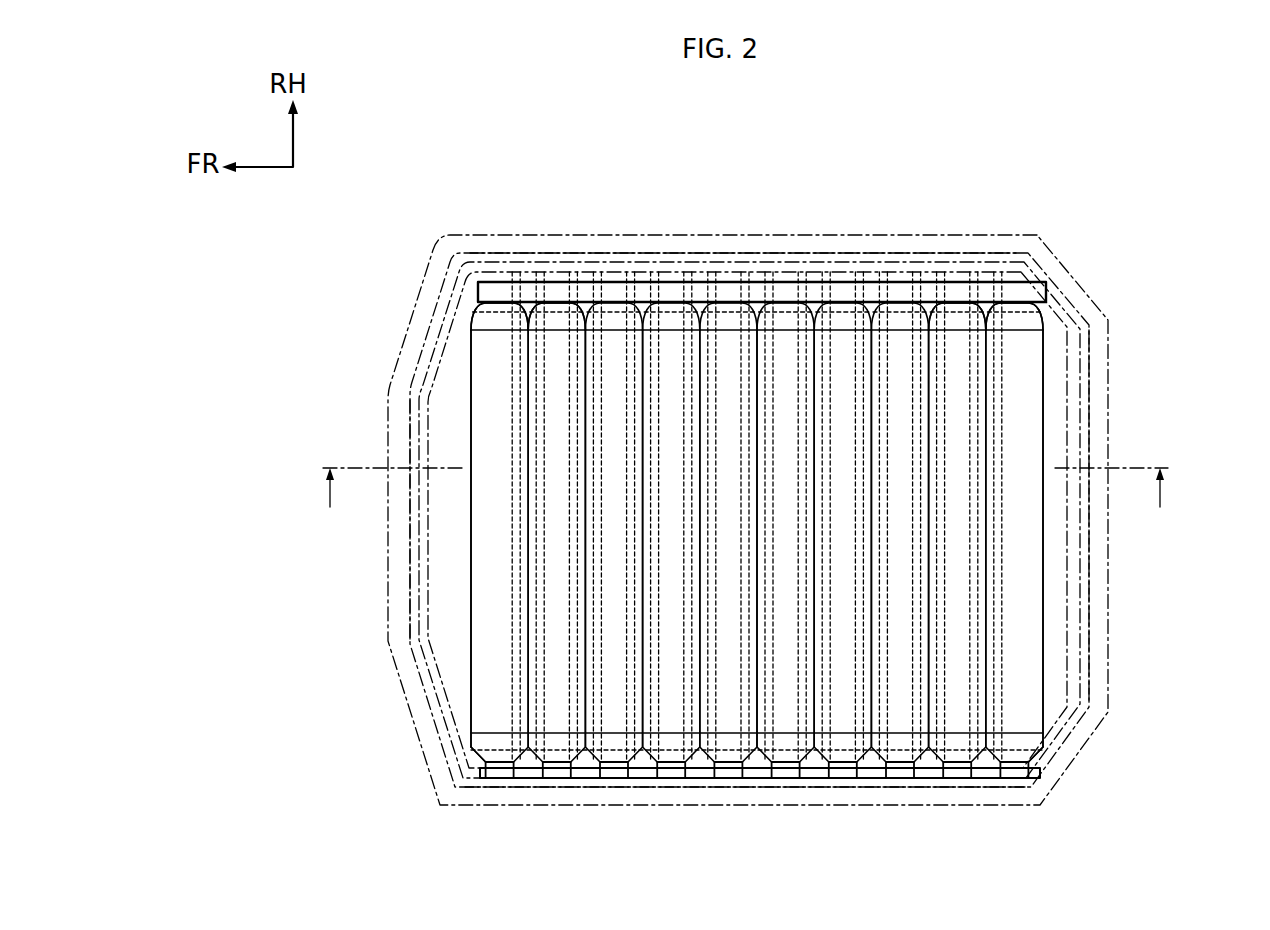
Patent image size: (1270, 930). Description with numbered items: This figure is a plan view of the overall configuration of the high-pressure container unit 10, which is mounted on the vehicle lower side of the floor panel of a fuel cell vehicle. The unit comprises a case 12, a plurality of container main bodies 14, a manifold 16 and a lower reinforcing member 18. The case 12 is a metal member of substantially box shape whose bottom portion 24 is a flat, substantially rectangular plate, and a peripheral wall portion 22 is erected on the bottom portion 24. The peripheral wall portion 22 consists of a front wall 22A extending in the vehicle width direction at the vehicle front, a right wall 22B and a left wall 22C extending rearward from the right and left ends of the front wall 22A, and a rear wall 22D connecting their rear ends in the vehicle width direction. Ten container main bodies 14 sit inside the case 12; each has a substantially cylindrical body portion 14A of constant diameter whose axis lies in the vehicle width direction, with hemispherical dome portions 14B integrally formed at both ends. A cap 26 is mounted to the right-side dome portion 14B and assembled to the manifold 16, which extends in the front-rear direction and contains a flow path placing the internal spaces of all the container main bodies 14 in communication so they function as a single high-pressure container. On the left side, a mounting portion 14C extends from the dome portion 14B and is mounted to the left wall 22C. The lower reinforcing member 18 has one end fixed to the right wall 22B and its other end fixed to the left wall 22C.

The high-pressure container unit 10 is at (1056, 174).
The case 12 is at (748, 530).
The container main body 14 is at (755, 557).
The body portion 14A is at (470, 542).
The dome portion 14B is at (478, 310).
The mounting portion 14C is at (500, 778).
The manifold 16 is at (482, 283).
The lower reinforcing member 18 is at (755, 268).
The peripheral wall portion 22 is at (862, 247).
The front wall 22A is at (410, 431).
The right wall 22B is at (822, 253).
The left wall 22C is at (708, 787).
The rear wall 22D is at (1090, 436).
The bottom portion 24 is at (922, 805).
The cap 26 is at (559, 302).